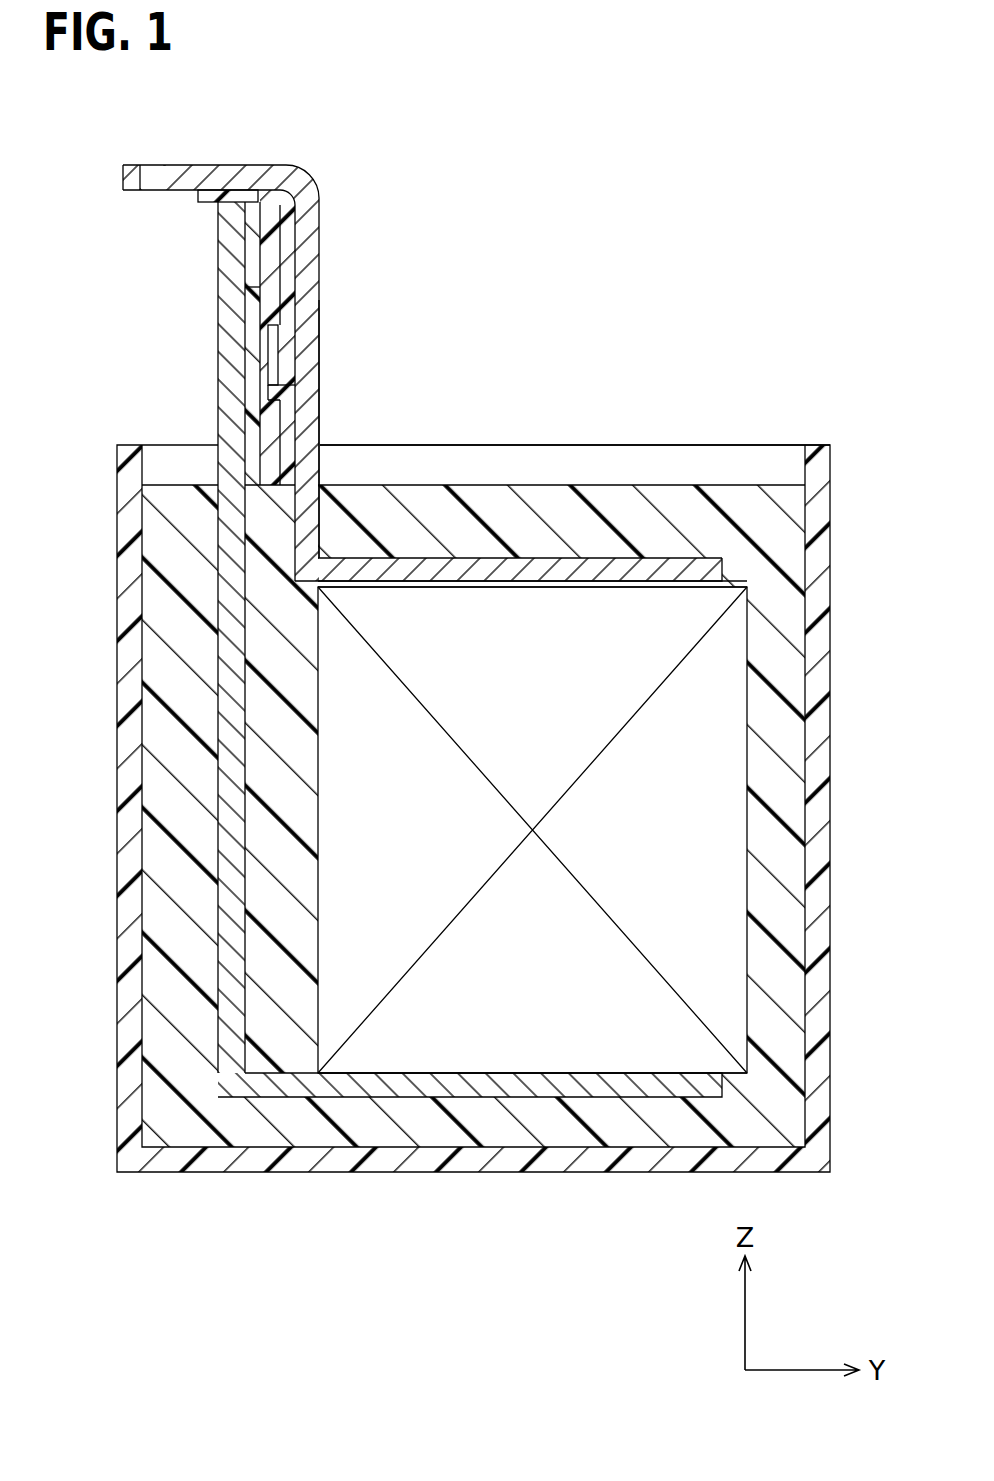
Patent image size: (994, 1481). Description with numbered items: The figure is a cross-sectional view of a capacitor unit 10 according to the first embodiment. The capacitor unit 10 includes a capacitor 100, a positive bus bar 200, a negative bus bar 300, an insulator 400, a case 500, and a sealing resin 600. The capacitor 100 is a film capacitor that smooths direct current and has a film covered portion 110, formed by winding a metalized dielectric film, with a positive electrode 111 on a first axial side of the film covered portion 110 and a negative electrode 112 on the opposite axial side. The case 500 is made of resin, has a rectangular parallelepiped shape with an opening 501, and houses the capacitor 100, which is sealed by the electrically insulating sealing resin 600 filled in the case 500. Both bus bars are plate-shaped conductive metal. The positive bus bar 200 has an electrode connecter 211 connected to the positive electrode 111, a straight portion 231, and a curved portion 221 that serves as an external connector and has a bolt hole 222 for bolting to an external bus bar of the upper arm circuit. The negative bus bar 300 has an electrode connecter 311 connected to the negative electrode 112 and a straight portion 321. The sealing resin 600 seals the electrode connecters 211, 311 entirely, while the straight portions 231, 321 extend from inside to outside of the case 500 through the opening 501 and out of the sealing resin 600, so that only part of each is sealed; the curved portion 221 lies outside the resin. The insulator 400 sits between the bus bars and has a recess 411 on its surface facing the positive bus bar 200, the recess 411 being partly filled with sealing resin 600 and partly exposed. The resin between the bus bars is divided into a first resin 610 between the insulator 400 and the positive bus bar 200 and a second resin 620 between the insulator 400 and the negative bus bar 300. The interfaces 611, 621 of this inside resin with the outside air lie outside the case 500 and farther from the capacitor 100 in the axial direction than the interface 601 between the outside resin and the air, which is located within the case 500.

The capacitor unit 10 is at (139, 1173).
The capacitor 100 is at (752, 775).
The film covered portion 110 is at (480, 1040).
The positive electrode 111 is at (610, 583).
The negative electrode 112 is at (605, 1073).
The positive bus bar 200 is at (465, 550).
The electrode connecter 211 is at (542, 557).
The curved portion 221 is at (222, 164).
The bolt hole 222 is at (166, 177).
The straight portion 231 is at (322, 289).
The negative bus bar 300 is at (437, 720).
The electrode connecter 311 is at (545, 1098).
The straight portion 321 is at (218, 310).
The insulator 400 is at (280, 247).
The recess 411 is at (275, 342).
The case 500 is at (830, 492).
The opening 501 is at (762, 445).
The sealing resin 600 is at (693, 505).
The interface 601 is at (167, 485).
The first resin 610 is at (288, 423).
The interface 611 is at (288, 380).
The second resin 620 is at (255, 353).
The interface 621 is at (257, 285).